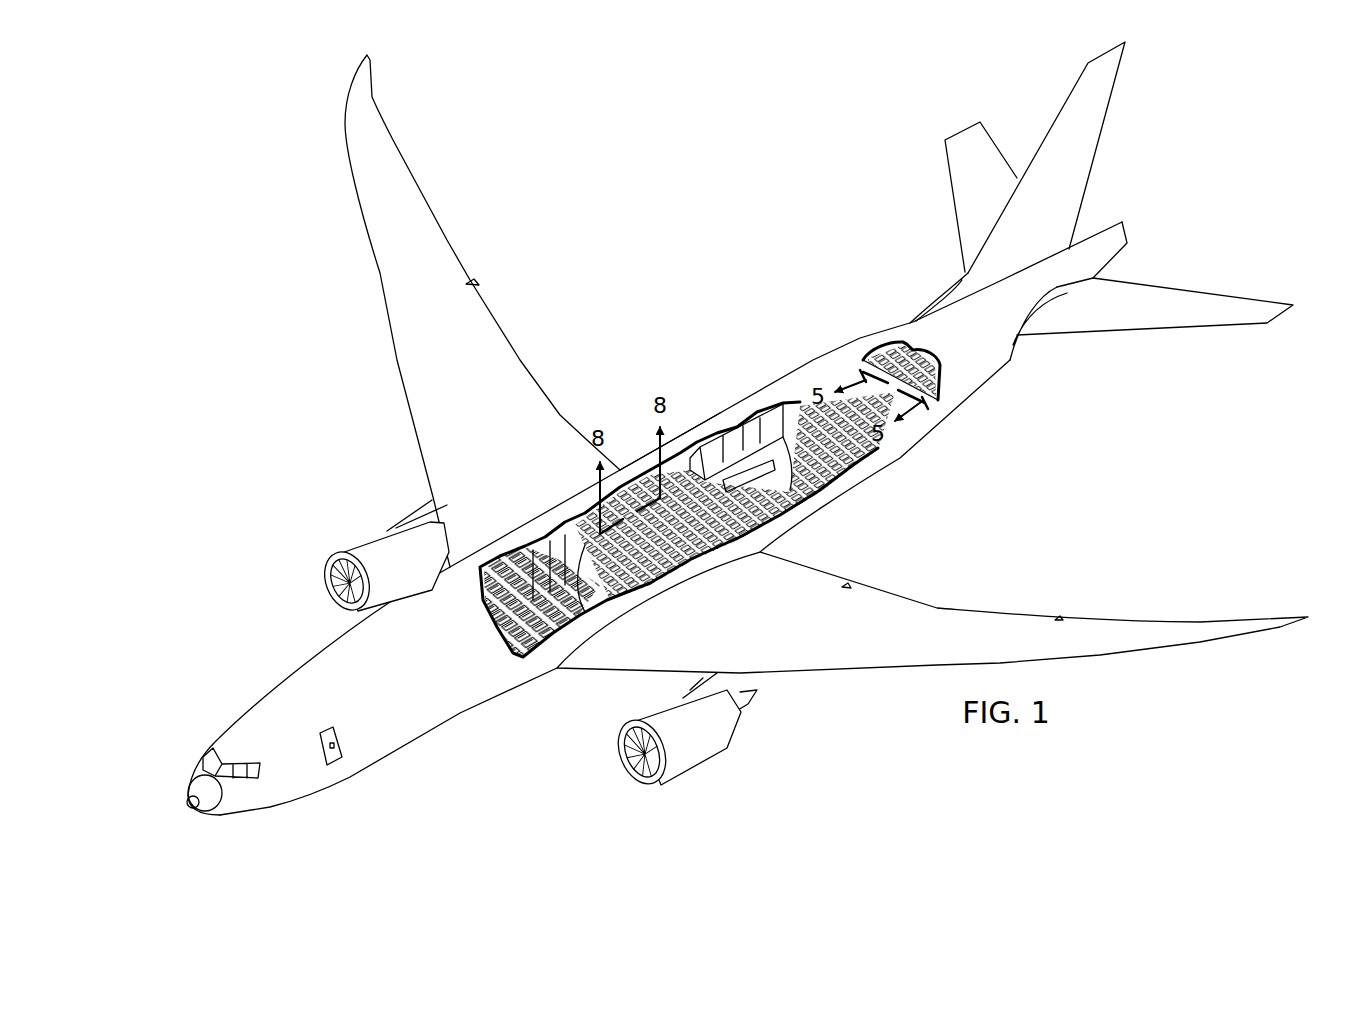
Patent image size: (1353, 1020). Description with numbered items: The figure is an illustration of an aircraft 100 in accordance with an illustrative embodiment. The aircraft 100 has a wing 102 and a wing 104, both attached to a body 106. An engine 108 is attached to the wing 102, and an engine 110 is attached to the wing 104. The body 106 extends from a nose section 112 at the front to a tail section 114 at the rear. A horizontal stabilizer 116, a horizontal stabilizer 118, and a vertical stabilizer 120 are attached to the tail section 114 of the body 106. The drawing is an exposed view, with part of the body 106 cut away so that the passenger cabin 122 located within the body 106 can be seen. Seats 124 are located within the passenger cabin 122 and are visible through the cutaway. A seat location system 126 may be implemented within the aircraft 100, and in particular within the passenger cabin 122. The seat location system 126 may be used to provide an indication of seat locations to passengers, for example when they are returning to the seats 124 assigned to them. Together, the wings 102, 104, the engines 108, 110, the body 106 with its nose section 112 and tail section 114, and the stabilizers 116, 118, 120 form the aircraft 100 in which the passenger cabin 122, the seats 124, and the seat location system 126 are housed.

The aircraft 100 is at (632, 288).
The wing 102 is at (855, 680).
The wing 104 is at (377, 268).
The body 106 is at (608, 407).
The engine 108 is at (712, 760).
The engine 110 is at (367, 527).
The nose section 112 is at (182, 784).
The tail section 114 is at (1091, 201).
The horizontal stabilizer 116 is at (1188, 292).
The horizontal stabilizer 118 is at (952, 212).
The vertical stabilizer 120 is at (1098, 145).
The passenger cabin 122 is at (793, 398).
The seats 124 is at (863, 457).
The seat location system 126 is at (888, 372).